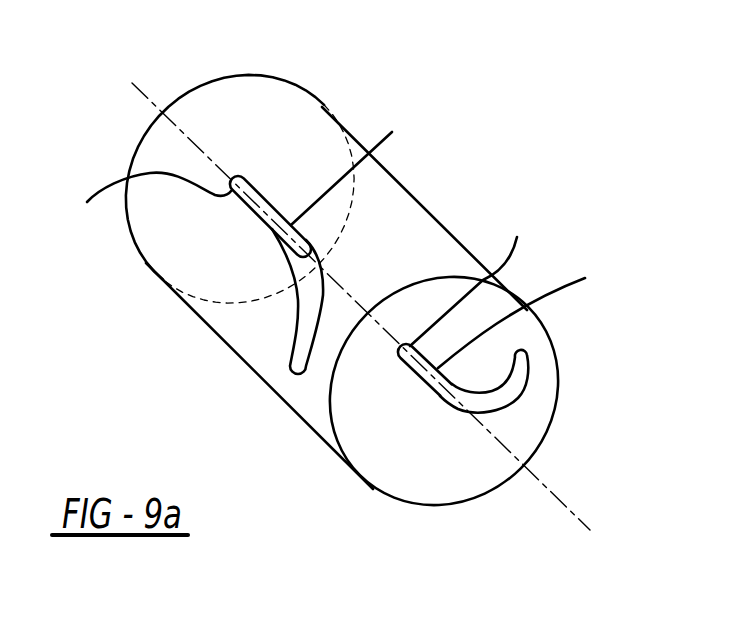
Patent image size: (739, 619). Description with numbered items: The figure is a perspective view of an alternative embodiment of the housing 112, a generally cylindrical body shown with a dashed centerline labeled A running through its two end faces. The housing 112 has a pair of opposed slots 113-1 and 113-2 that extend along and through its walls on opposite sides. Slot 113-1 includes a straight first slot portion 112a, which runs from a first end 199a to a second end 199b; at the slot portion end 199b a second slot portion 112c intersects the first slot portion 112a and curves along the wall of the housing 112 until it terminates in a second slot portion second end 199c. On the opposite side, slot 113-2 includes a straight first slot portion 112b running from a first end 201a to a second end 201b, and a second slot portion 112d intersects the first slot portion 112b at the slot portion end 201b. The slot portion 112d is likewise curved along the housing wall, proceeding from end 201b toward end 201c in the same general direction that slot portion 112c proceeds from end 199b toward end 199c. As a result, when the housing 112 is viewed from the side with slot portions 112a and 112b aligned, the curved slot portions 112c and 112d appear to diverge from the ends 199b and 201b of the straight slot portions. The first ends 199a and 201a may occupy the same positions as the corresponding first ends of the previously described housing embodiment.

The housing 112 is at (141, 263).
The first slot portion 112a is at (260, 215).
The first slot portion 112b is at (427, 383).
The second slot portion 112c is at (330, 410).
The second slot portion 112d is at (505, 387).
The slot 113-1 is at (258, 192).
The slot 113-2 is at (425, 358).
The first end 199a is at (142, 199).
The second end 199b is at (349, 165).
The second slot portion second end 199c is at (292, 380).
The first end 201a is at (477, 277).
The second end 201b is at (533, 319).
The end 201c is at (523, 354).
The longitudinal axis A is at (567, 510).